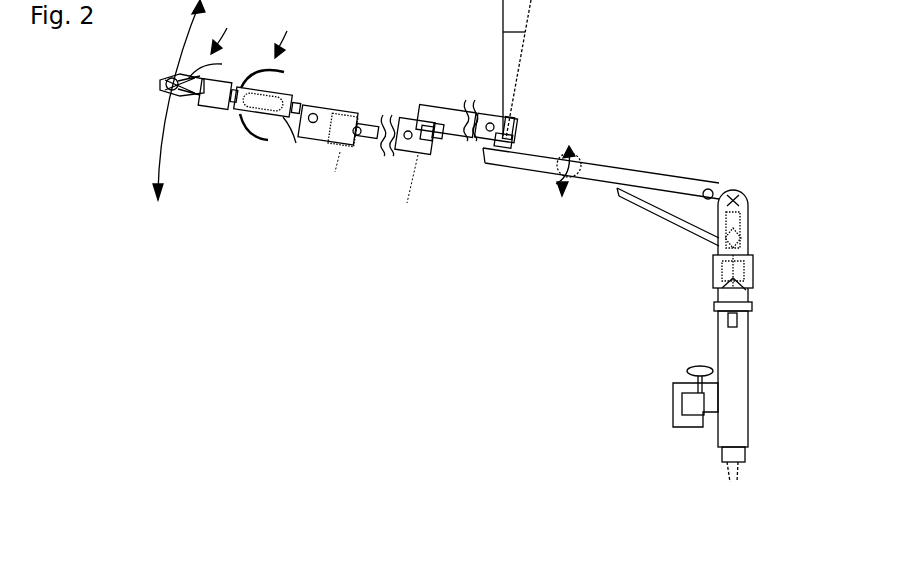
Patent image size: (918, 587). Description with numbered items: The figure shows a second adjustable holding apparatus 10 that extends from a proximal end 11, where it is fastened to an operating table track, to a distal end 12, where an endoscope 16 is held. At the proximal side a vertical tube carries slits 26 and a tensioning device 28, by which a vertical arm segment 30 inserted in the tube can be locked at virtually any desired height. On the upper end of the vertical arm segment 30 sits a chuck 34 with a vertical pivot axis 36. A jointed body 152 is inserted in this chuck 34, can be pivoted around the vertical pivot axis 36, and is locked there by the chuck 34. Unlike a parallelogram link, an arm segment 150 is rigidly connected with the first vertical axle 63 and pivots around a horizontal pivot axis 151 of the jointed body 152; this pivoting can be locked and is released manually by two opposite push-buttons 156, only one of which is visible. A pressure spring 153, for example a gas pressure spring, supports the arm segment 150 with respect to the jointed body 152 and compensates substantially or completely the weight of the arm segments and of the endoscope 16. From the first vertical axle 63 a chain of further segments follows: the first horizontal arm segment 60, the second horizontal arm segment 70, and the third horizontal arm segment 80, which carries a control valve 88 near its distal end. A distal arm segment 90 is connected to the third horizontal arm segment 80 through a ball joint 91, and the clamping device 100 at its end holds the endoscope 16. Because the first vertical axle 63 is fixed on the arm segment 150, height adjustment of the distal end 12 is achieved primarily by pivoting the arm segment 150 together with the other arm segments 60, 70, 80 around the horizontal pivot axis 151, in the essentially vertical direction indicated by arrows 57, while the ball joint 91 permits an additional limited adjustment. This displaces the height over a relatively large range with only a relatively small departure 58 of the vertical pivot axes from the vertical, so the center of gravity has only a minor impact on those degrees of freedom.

The adjustable holding apparatus 10 is at (302, 417).
The proximal end 11 is at (638, 351).
The distal end 12 is at (250, 183).
The endoscope 16 is at (165, 86).
The slits 26 is at (716, 330).
The tensioning device 28 is at (713, 307).
The vertical arm segment 30 is at (720, 297).
The chuck 34 is at (712, 276).
The vertical pivot axis 36 is at (743, 286).
The arrows 57 is at (163, 174).
The departure 58 is at (503, 42).
The first horizontal arm segment 60 is at (452, 108).
The first vertical axle 63 is at (516, 143).
The second horizontal arm segment 70 is at (383, 122).
The third horizontal arm segment 80 is at (323, 100).
The control valve 88 is at (313, 128).
The distal arm segment 90 is at (273, 75).
The ball joint 91 is at (292, 142).
The clamping device 100 is at (221, 42).
The arm segment 150 is at (622, 166).
The horizontal pivot axis 151 is at (747, 193).
The jointed body 152 is at (747, 218).
The pressure spring 153 is at (650, 212).
The push-buttons 156 is at (713, 189).